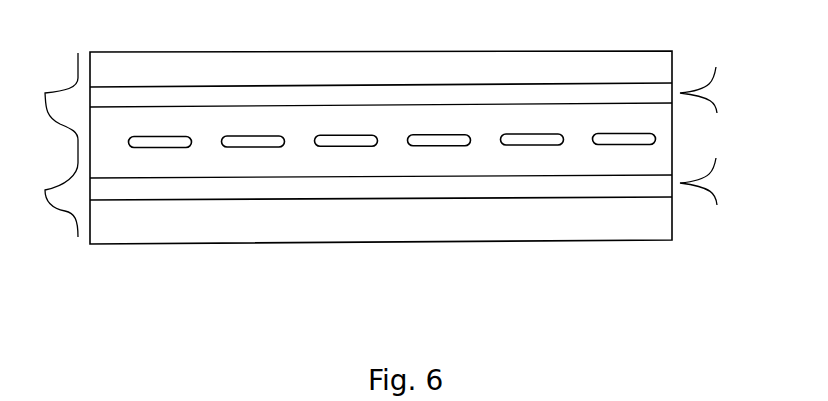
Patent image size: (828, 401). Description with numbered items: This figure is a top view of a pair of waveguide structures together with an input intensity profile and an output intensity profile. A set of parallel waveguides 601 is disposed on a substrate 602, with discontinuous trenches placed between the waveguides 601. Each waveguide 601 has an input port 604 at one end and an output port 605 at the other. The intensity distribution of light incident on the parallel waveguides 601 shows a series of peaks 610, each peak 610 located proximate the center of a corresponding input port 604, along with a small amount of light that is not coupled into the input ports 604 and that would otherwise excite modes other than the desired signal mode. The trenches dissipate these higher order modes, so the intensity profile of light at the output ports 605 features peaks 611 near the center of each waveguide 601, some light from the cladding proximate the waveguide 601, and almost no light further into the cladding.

The parallel waveguides 601 is at (488, 97).
The substrate 602 is at (448, 58).
The input port 604 is at (90, 87).
The output port 605 is at (674, 82).
The peaks 610 is at (47, 93).
The peaks 611 is at (685, 95).